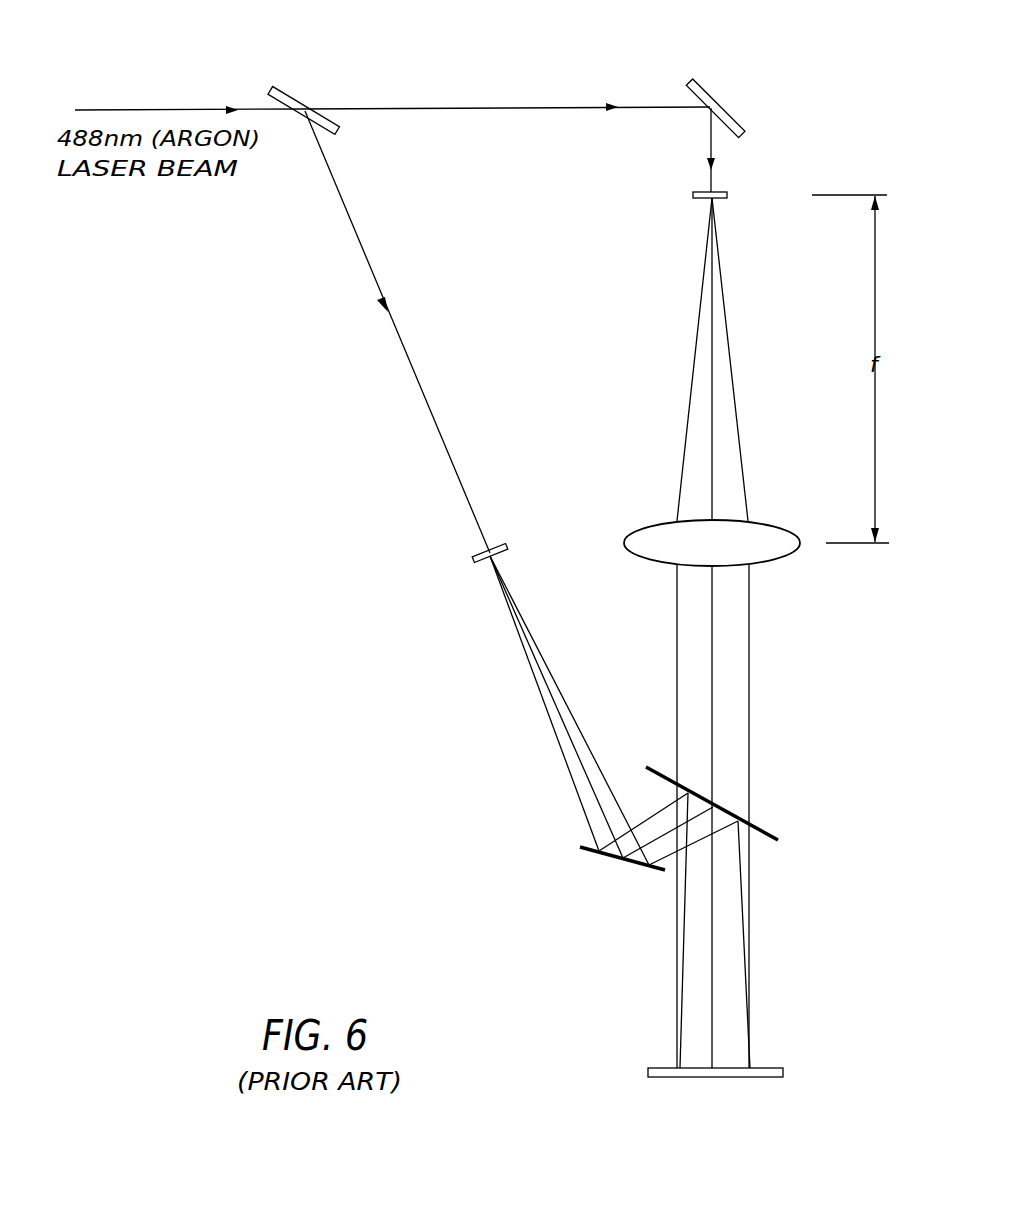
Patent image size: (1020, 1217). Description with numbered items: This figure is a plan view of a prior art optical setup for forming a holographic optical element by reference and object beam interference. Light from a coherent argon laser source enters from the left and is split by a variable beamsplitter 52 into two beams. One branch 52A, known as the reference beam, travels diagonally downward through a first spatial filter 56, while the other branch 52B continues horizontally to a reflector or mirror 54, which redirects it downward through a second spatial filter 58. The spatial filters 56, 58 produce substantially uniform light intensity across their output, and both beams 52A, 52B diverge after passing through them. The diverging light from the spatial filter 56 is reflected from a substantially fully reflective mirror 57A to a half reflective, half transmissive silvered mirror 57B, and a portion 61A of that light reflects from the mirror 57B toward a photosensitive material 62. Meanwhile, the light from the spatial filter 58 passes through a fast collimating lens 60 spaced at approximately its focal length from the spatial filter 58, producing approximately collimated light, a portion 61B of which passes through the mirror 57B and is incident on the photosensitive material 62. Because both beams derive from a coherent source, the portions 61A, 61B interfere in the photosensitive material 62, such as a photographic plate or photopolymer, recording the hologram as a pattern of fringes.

The variable beamsplitter 52 is at (286, 90).
The reference beam branch 52A is at (418, 396).
The object beam branch 52B is at (512, 107).
The mirror 54 is at (705, 85).
The first spatial filter 56 is at (474, 553).
The 100% reflective mirror 57A is at (580, 855).
The 50% reflective/50% transmissive mirror 57B is at (767, 832).
The second spatial filter 58 is at (699, 192).
The collimating lens 60 is at (782, 560).
The reflected light portion 61A is at (745, 888).
The transmitted light portion 61B is at (752, 945).
The photosensitive material 62 is at (770, 1065).